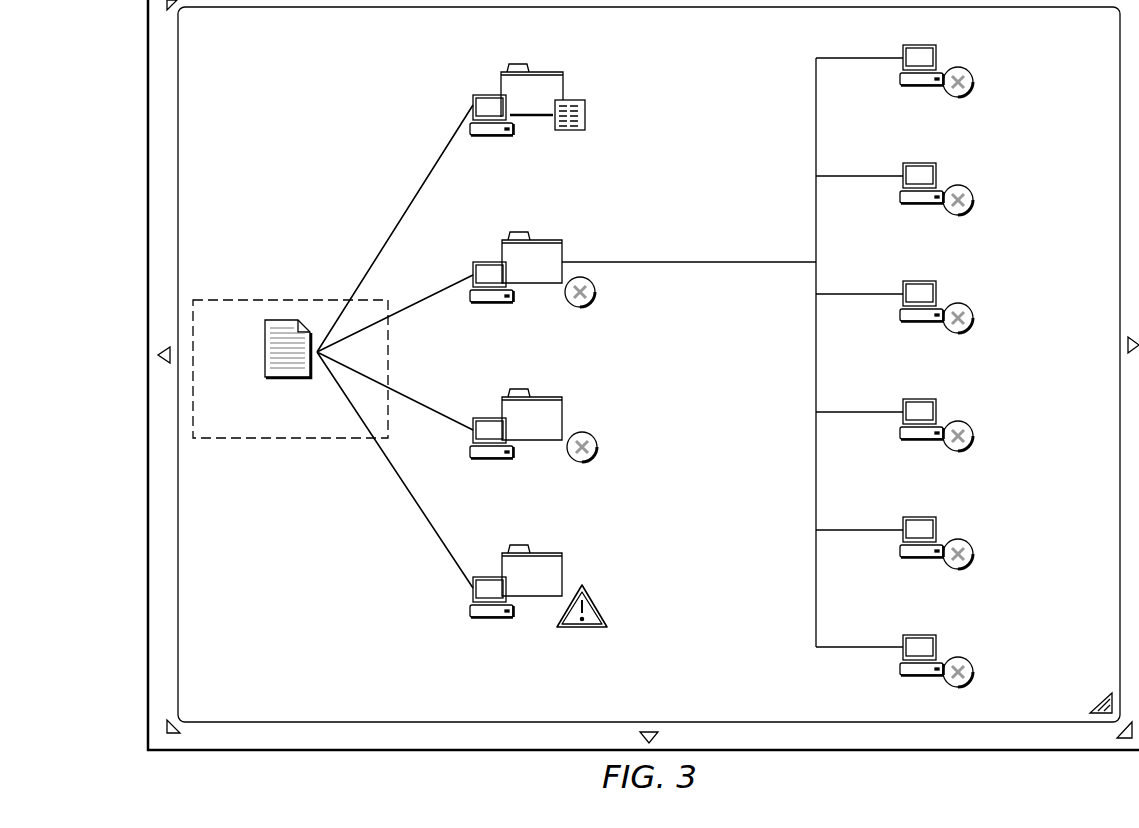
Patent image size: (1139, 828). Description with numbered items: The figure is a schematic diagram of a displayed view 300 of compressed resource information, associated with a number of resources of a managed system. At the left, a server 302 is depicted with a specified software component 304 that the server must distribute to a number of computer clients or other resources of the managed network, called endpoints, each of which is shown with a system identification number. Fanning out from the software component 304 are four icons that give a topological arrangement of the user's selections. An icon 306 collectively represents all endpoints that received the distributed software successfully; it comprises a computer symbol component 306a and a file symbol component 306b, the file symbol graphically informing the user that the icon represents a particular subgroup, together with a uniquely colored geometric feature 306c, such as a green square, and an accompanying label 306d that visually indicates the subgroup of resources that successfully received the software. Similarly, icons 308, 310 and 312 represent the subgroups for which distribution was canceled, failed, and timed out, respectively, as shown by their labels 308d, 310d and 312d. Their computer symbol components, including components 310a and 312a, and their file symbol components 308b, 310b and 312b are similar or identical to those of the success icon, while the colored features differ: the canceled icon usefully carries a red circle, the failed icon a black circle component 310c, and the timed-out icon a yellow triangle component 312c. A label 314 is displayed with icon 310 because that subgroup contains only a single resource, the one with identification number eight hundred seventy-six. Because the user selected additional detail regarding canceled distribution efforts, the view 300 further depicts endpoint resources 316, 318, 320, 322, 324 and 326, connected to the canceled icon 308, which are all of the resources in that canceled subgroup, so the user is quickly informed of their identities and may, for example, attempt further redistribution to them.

The view 300 is at (146, 149).
The server 302 is at (253, 298).
The software component 304 is at (265, 340).
The icon 306 is at (646, 72).
The computer symbol component 306a is at (478, 94).
The file symbol component 306b is at (546, 64).
The uniquely colored geometric feature 306c is at (578, 100).
The label 306d is at (688, 121).
The icon 308 is at (624, 238).
The file symbol component 308b is at (545, 238).
The label 308d is at (688, 292).
The icon 310 is at (488, 399).
The computer symbol component 310a is at (485, 460).
The file symbol component 310b is at (540, 443).
The black circle component 310c is at (587, 463).
The label 310d is at (656, 449).
The icon 312 is at (605, 575).
The computer symbol component 312a is at (485, 618).
The file symbol component 312b is at (538, 598).
The yellow triangle component 312c is at (587, 632).
The label 312d is at (690, 606).
The label 314 is at (663, 416).
The endpoint resource 316 is at (959, 74).
The endpoint resource 318 is at (959, 192).
The endpoint resource 320 is at (959, 310).
The endpoint resource 322 is at (960, 428).
The endpoint resource 324 is at (960, 546).
The endpoint resource 326 is at (960, 664).